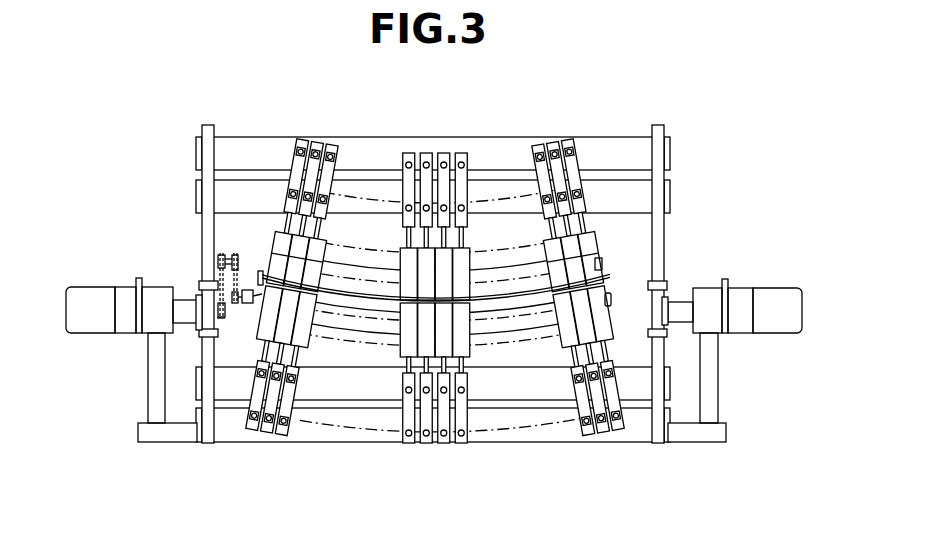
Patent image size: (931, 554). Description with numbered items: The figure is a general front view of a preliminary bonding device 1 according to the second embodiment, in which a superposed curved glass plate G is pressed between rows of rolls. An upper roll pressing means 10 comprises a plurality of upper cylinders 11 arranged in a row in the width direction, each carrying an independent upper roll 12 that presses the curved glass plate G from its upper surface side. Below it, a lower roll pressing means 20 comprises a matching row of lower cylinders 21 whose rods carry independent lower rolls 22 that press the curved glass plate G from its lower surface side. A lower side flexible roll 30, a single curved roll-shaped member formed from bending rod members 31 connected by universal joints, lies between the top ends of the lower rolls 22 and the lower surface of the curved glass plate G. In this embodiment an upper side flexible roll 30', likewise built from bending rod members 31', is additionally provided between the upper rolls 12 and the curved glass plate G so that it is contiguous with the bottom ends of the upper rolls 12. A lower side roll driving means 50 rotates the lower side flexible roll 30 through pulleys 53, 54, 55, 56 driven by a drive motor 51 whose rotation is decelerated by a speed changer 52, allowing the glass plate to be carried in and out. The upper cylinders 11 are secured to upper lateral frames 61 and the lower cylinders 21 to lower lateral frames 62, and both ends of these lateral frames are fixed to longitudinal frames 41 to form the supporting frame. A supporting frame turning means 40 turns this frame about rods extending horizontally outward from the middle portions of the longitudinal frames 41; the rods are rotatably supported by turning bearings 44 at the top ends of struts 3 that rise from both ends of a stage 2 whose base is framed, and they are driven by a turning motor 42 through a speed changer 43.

The preliminary bonding device 1 is at (725, 165).
The stage 2 is at (703, 438).
The strut 3 is at (712, 378).
The upper roll pressing means 10 is at (452, 145).
The upper cylinder 11 is at (283, 160).
The upper roll 12 is at (480, 248).
The lower roll pressing means 20 is at (455, 462).
The lower cylinder 21 is at (305, 393).
The lower roll 22 is at (403, 347).
The lower side flexible roll 30 is at (445, 363).
The upper side flexible roll 30' is at (445, 236).
The bending rod member 31 is at (444, 291).
The bending rod member 31' is at (665, 232).
The supporting frame turning means 40 is at (764, 350).
The longitudinal frame 41 is at (208, 127).
The turning motor 42 is at (780, 293).
The speed changer 43 is at (742, 292).
The turning bearing 44 is at (157, 290).
The lower side roll driving means 50 is at (92, 350).
The drive motor 51 is at (85, 290).
The speed changer 52 is at (127, 289).
The pulley 53 is at (222, 318).
The pulley 54 is at (221, 255).
The pulley 55 is at (236, 255).
The pulley 56 is at (240, 304).
The upper lateral frame 61 is at (242, 192).
The lower lateral frame 62 is at (350, 385).
The curved glass plate G is at (614, 271).